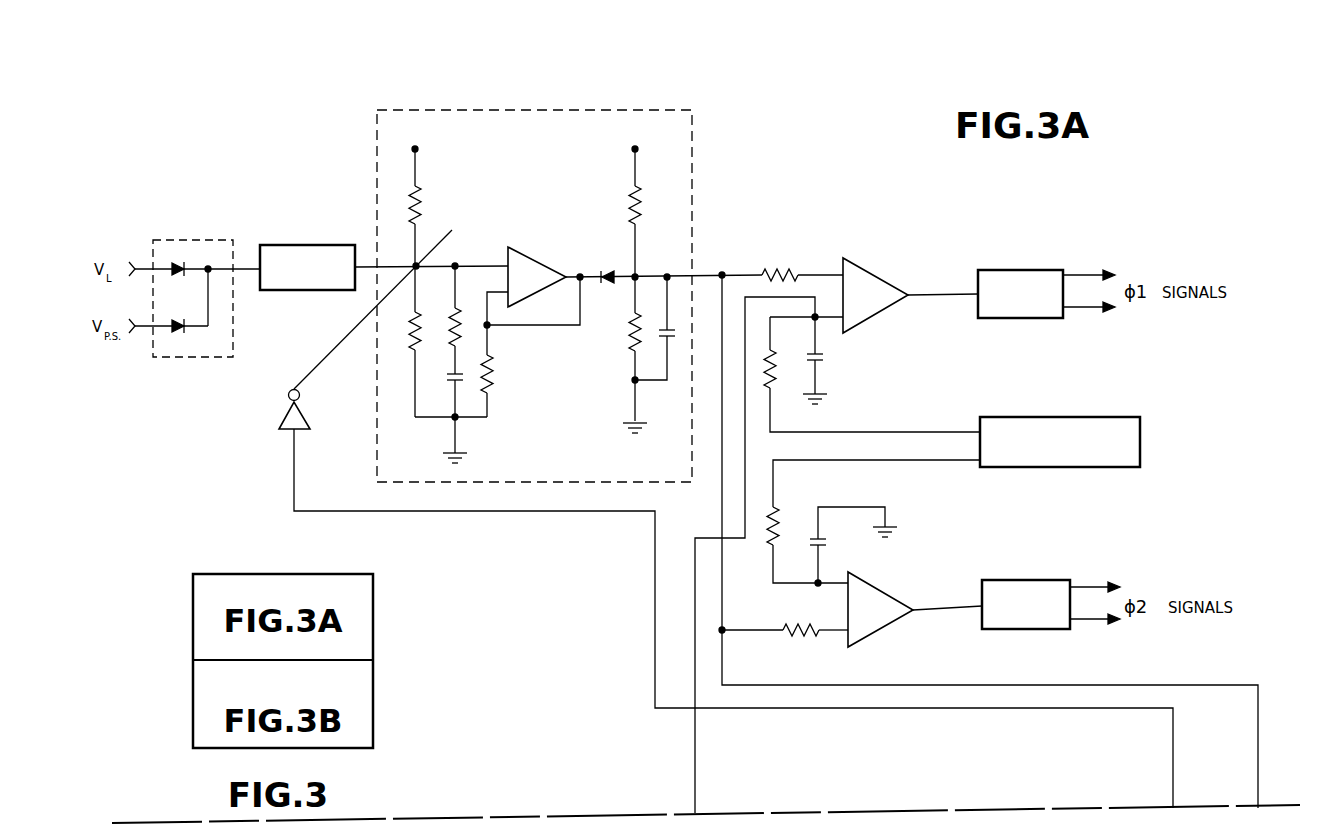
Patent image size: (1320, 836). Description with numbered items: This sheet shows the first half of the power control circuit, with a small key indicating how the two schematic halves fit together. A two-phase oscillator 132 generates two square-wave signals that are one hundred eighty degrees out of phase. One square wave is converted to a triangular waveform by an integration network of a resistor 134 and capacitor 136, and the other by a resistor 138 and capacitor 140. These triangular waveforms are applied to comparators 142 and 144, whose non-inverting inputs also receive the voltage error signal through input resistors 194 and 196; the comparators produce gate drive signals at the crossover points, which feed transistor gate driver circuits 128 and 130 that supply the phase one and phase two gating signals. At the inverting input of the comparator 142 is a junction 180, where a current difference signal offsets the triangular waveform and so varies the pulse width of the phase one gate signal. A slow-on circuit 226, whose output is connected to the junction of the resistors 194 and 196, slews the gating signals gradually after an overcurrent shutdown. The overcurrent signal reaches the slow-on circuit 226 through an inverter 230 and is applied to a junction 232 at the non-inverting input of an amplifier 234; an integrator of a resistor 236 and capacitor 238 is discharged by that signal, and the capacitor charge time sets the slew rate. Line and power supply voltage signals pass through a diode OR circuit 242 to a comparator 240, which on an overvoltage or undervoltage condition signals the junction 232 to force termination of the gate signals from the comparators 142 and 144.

The diode OR circuit 242 is at (201, 240).
The comparator 240 is at (315, 244).
The slow-on circuit 226 is at (569, 108).
The junction 232 is at (438, 242).
The amplifier 234 is at (542, 262).
The resistor 236 is at (463, 307).
The capacitor 238 is at (447, 379).
The inverter 230 is at (282, 413).
The input resistor 194 is at (783, 267).
The junction 180 is at (828, 297).
The comparator 142 is at (878, 267).
The resistor 134 is at (783, 368).
The capacitor 136 is at (820, 362).
The transistor gate driver circuit 128 is at (1036, 269).
The two-phase oscillator 132 is at (1092, 400).
The resistor 138 is at (786, 513).
The capacitor 140 is at (832, 542).
The comparator 144 is at (912, 640).
The input resistor 196 is at (794, 640).
The transistor gate driver circuit 130 is at (1038, 578).